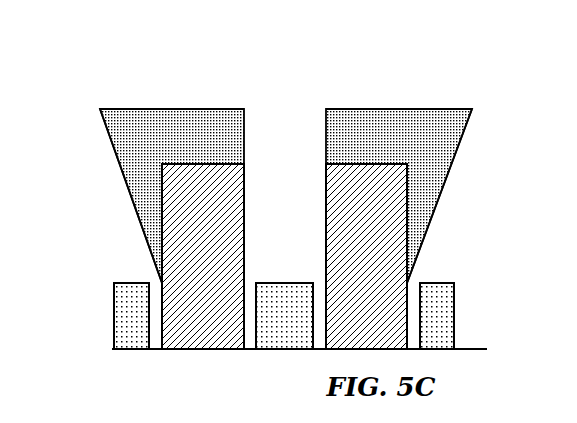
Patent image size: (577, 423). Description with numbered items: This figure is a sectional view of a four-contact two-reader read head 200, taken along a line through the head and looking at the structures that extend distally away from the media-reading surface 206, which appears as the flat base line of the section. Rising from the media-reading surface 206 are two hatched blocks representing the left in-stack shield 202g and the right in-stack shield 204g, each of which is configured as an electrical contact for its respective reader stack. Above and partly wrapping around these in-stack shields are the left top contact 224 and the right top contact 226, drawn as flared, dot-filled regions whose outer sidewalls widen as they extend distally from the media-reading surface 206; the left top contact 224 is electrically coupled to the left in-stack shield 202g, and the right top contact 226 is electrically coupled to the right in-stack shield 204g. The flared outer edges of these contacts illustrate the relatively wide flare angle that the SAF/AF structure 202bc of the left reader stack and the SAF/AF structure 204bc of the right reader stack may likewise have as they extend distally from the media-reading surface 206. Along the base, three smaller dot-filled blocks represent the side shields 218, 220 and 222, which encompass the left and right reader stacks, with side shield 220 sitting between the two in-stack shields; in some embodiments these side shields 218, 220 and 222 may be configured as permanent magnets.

The read head 200 is at (269, 220).
The SAF/AF structure 202bc is at (94, 167).
The left in-stack shield 202g is at (203, 256).
The SAF/AF structure 204bc is at (467, 176).
The right in-stack shield 204g is at (366, 256).
The media-reading surface 206 is at (242, 360).
The side shield 218 is at (123, 336).
The side shield 220 is at (270, 352).
The side shield 222 is at (440, 334).
The left top contact 224 is at (190, 109).
The right top contact 226 is at (383, 109).